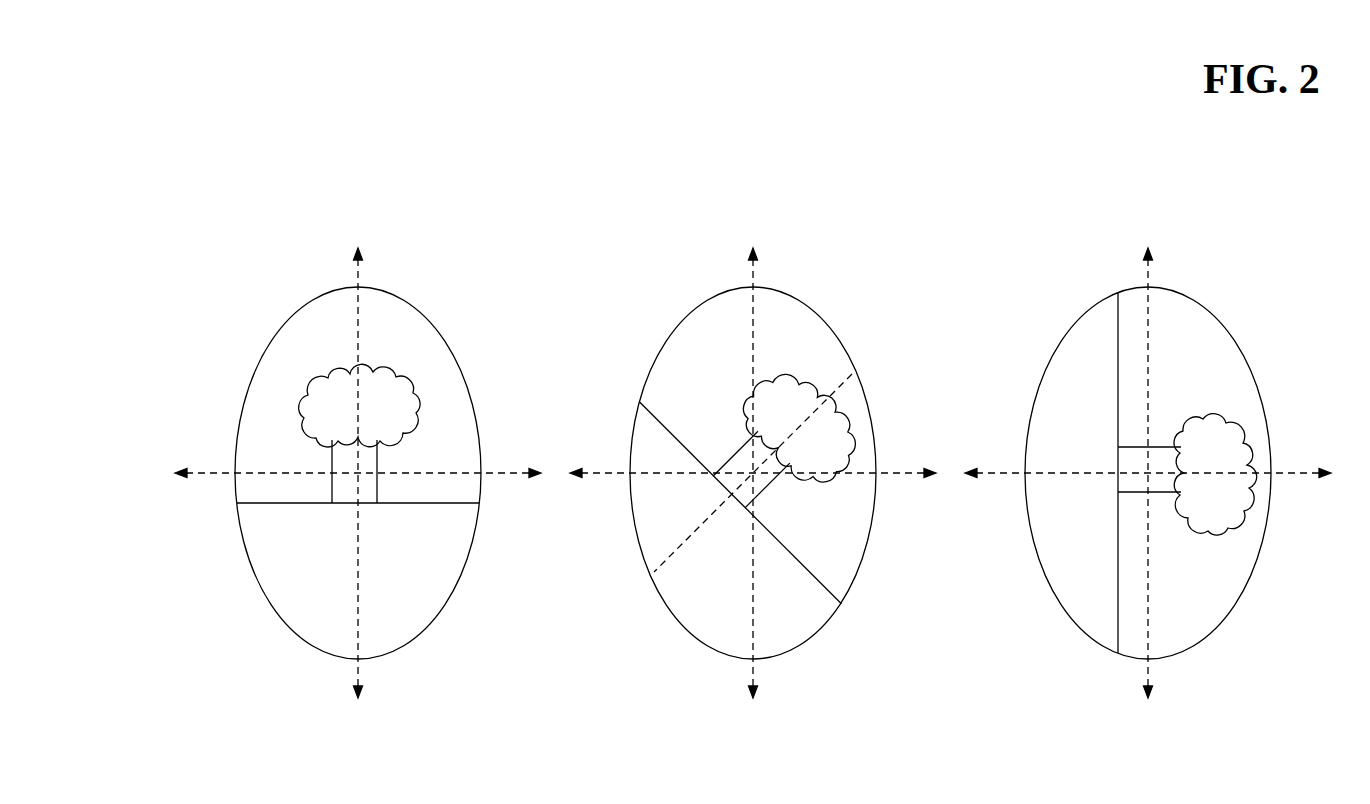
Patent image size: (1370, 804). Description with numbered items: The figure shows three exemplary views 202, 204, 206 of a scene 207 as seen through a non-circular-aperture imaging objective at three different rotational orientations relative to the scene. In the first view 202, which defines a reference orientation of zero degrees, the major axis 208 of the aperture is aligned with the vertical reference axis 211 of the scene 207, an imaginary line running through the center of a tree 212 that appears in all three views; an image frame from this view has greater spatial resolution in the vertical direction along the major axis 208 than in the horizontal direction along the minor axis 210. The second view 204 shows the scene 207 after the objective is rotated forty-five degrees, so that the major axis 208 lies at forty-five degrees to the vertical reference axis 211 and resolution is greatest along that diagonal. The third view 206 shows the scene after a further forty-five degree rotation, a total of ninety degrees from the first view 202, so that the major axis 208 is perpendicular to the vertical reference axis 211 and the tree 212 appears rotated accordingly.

The first view 202 is at (400, 297).
The second view 204 is at (798, 298).
The third view 206 is at (1182, 295).
The scene 207 is at (445, 365).
The major axis 208 is at (357, 272).
The horizontal axis of device 210 is at (505, 473).
The vertical reference axis 211 is at (357, 345).
The tree 212 is at (322, 375).